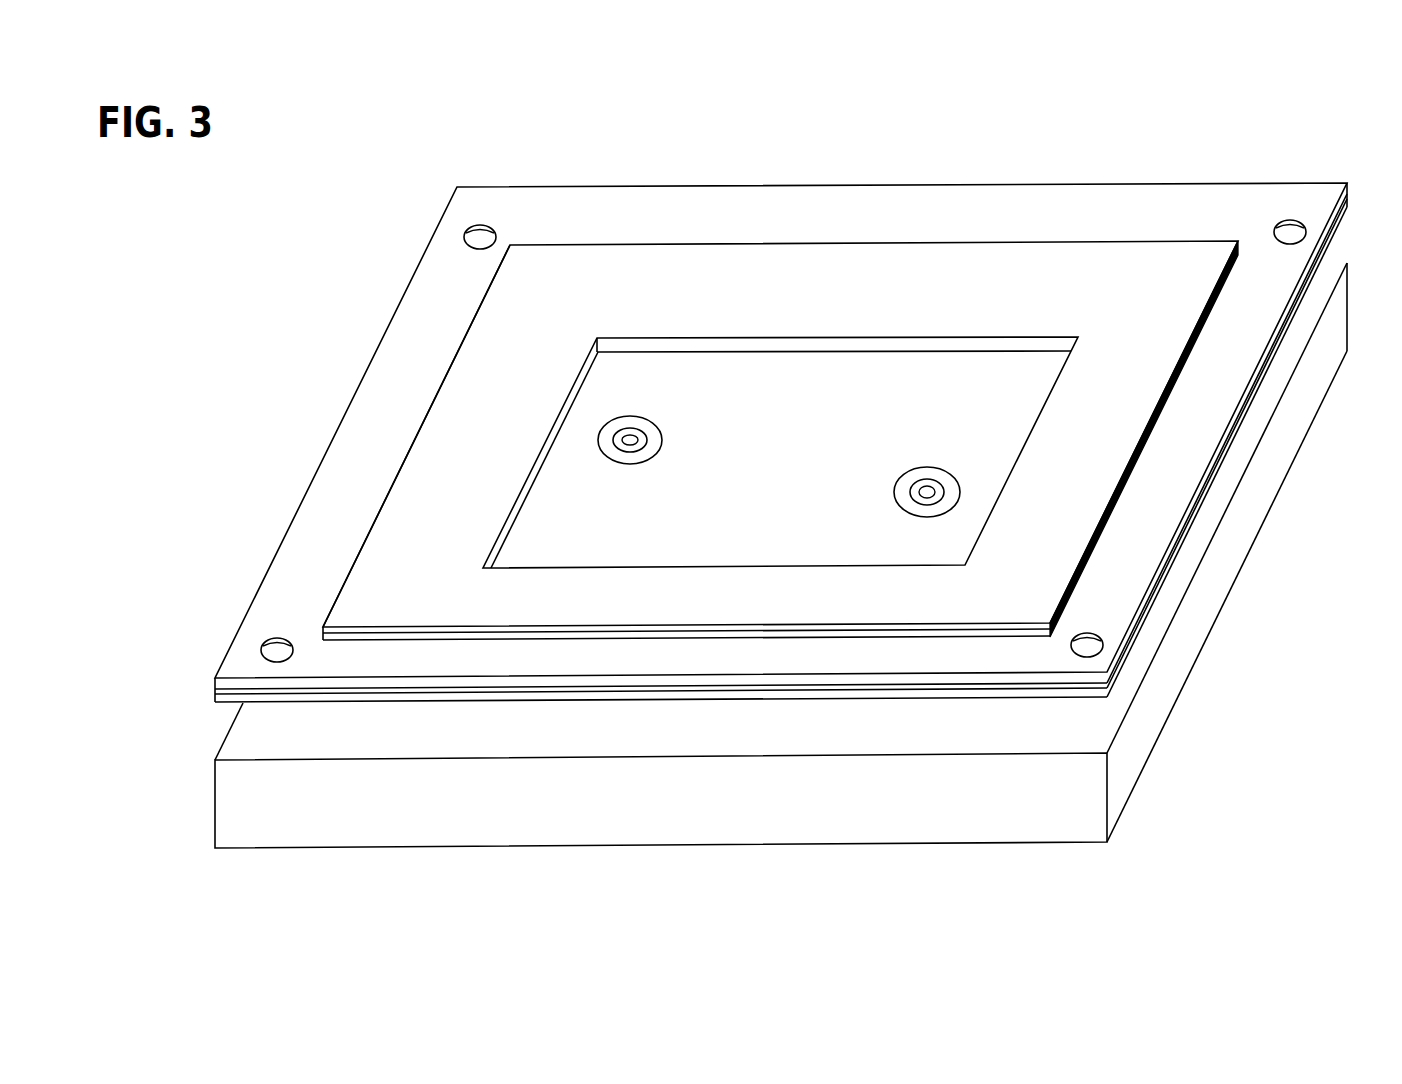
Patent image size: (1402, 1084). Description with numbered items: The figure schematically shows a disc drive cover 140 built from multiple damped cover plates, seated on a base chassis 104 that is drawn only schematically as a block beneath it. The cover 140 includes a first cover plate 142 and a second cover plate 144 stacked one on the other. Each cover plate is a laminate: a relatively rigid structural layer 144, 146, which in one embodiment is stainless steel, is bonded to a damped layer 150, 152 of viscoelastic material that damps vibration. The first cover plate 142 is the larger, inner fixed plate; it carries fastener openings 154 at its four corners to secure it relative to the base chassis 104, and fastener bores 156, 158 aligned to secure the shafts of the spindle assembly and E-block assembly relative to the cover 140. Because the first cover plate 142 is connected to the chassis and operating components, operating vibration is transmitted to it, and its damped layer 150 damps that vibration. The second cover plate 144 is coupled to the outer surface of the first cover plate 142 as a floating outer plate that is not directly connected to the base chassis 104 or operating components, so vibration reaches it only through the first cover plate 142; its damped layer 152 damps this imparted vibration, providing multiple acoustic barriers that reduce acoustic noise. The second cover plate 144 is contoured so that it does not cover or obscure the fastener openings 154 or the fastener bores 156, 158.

The base chassis 104 is at (1223, 573).
The cover 140 is at (838, 178).
The first cover plate 142 is at (1212, 437).
The second cover plate 144 is at (990, 268).
The relatively rigid structural layer 146 is at (498, 533).
The damped layer 150 is at (213, 701).
The damped layer 152 is at (508, 538).
The fastener openings 154 is at (477, 232).
The fastener bore 156 is at (628, 440).
The fastener bore 158 is at (927, 492).